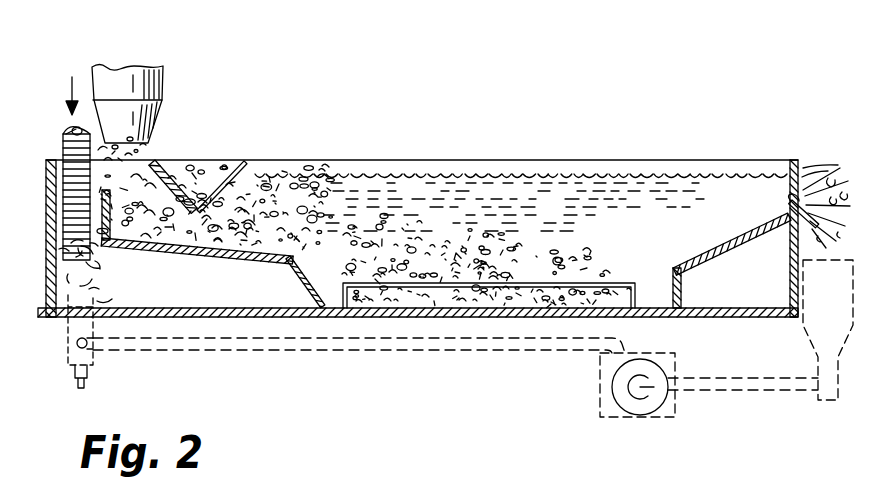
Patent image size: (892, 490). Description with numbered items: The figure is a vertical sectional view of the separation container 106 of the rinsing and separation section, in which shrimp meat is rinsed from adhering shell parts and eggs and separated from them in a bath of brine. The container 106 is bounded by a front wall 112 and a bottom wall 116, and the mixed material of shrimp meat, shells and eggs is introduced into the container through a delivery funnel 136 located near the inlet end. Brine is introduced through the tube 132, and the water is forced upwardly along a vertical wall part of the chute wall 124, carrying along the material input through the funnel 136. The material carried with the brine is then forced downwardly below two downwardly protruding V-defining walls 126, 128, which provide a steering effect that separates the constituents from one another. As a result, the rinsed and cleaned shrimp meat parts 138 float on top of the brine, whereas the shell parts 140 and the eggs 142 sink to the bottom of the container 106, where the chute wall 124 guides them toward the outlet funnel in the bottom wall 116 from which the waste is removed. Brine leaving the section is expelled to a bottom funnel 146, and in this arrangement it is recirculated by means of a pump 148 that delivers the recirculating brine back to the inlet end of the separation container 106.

The separation container 106 is at (43, 312).
The front wall 112 is at (298, 285).
The bottom wall 116 is at (207, 315).
The chute wall 124 is at (140, 243).
The V-defining wall 126 is at (173, 182).
The V-defining wall 128 is at (217, 177).
The tube 132 is at (72, 147).
The delivery funnel 136 is at (150, 88).
The shrimp meat parts 138 is at (320, 170).
The shell parts 140 is at (417, 237).
The eggs 142 is at (383, 217).
The bottom funnel 146 is at (843, 263).
The pump 148 is at (650, 400).